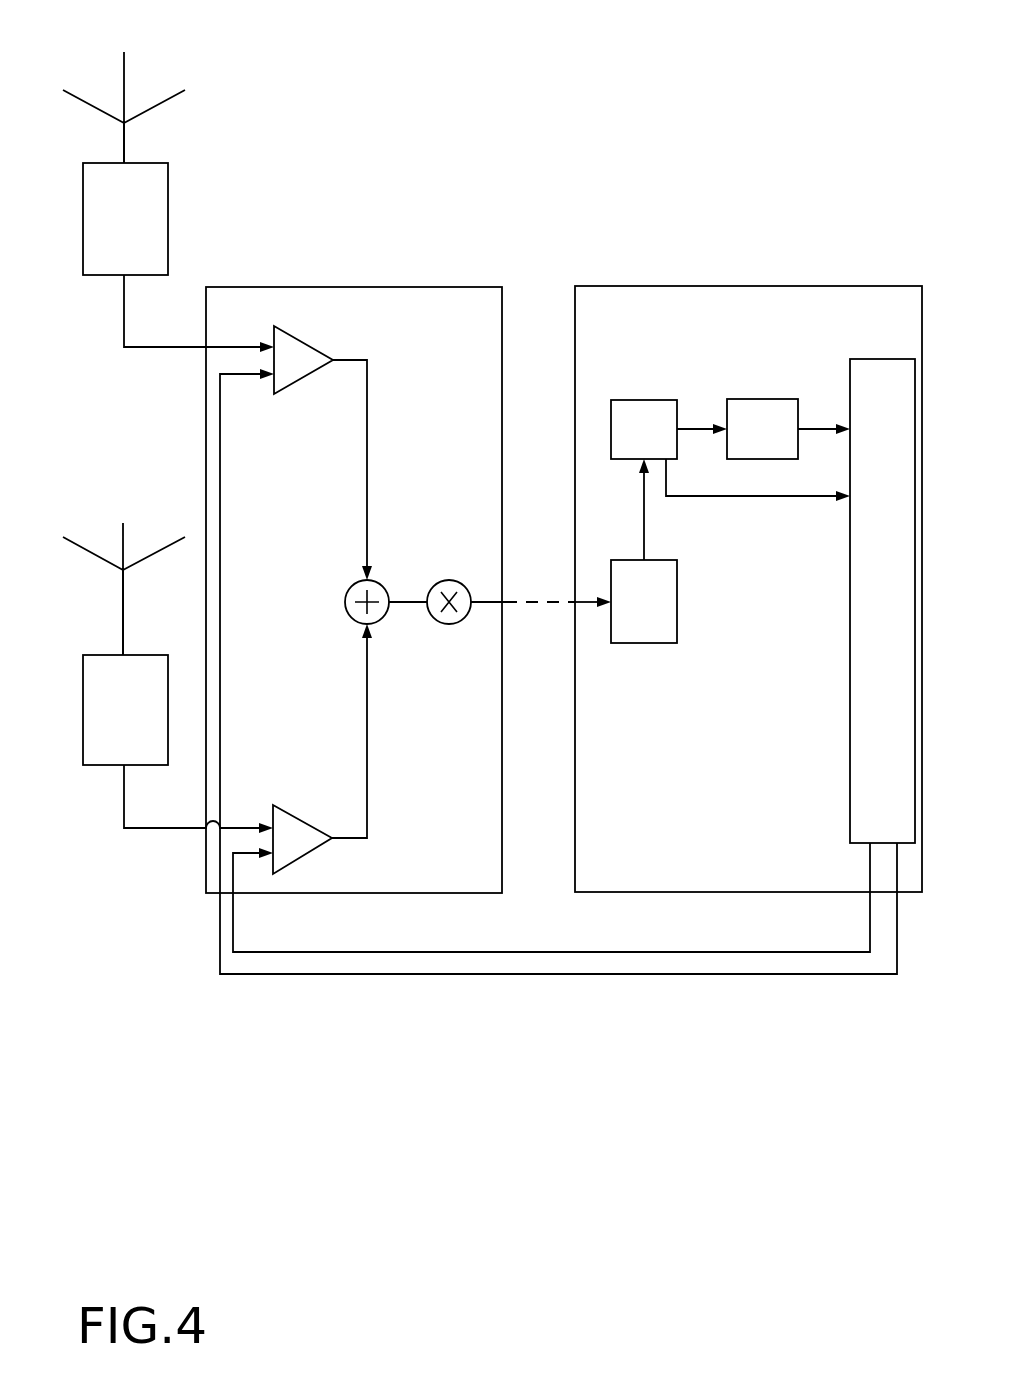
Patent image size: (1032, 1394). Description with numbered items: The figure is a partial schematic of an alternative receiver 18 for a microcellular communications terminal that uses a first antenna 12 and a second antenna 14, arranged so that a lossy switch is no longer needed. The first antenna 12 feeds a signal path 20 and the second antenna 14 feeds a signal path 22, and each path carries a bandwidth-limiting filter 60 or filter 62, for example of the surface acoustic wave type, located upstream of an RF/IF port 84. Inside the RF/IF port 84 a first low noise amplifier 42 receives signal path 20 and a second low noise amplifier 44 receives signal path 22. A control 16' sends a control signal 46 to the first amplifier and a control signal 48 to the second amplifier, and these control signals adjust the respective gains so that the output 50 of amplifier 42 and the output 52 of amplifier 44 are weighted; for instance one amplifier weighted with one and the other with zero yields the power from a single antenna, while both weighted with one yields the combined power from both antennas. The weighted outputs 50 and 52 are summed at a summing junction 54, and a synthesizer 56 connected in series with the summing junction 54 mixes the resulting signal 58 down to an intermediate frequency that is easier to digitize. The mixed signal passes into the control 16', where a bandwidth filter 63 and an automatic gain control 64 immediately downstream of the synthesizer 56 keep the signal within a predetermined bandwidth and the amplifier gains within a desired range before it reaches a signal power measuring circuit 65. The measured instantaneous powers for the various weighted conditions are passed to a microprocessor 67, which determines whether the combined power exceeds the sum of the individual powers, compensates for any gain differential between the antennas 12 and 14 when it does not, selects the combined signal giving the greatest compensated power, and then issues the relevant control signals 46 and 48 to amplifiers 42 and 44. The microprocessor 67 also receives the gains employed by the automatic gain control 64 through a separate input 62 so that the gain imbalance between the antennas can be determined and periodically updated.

The first antenna 12 is at (144, 70).
The second antenna 14 is at (109, 503).
The control 16' is at (748, 569).
The receiver 18 is at (599, 243).
The signal path 20 is at (124, 137).
The signal path 22 is at (123, 608).
The first low noise amplifier 42 is at (301, 337).
The second low noise amplifier 44 is at (296, 816).
The control signal 46 is at (490, 976).
The control signal 48 is at (440, 952).
The output 50 is at (368, 447).
The output 52 is at (368, 746).
The summing junction 54 is at (378, 582).
The synthesizer 56 is at (462, 585).
The signal 58 is at (407, 603).
The filter 60 is at (125, 219).
The filter 62 is at (748, 520).
The bandwidth filter 63 is at (677, 607).
The automatic gain control 64 is at (646, 400).
The signal power measuring circuit 65 is at (765, 399).
The microprocessor 67 is at (850, 704).
The RF/IF port 84 is at (310, 287).